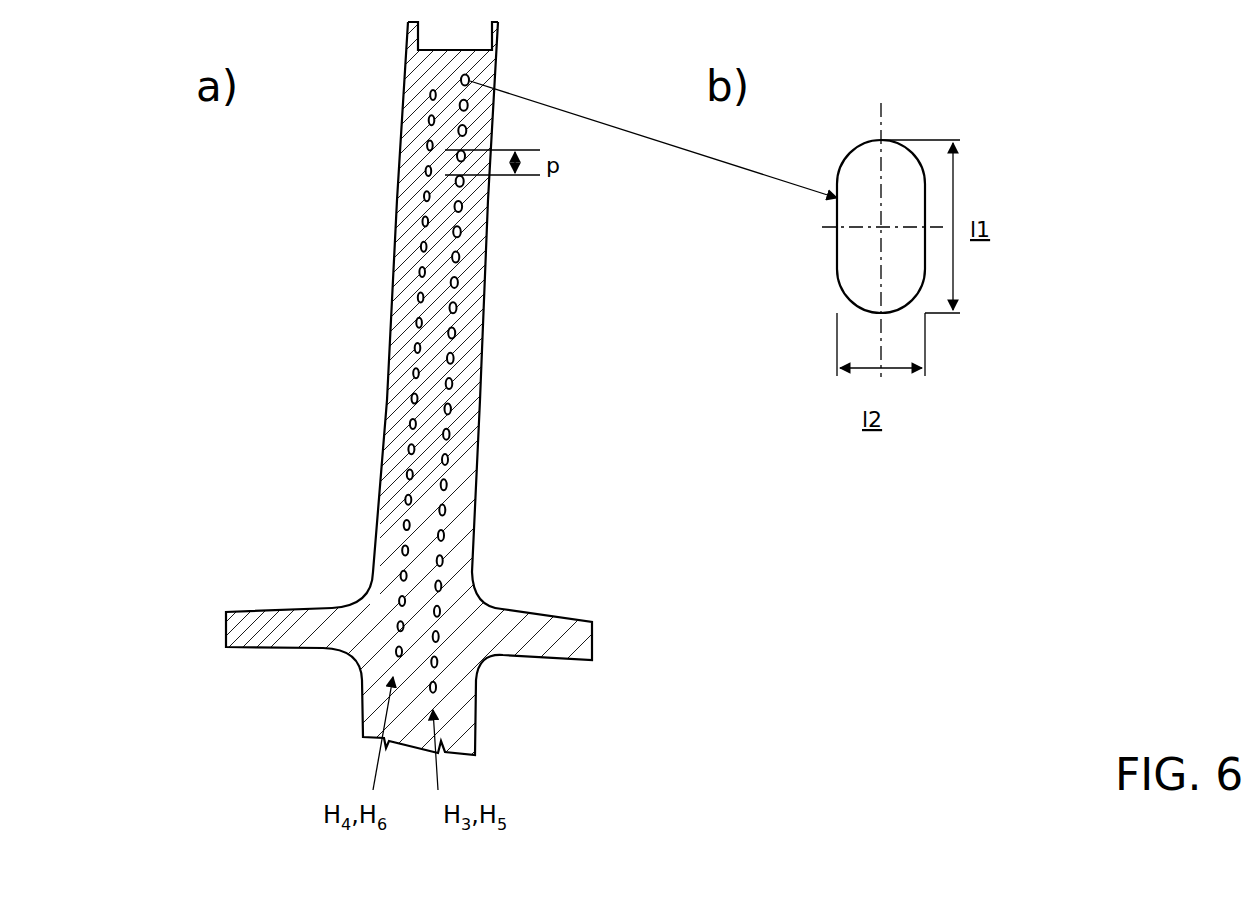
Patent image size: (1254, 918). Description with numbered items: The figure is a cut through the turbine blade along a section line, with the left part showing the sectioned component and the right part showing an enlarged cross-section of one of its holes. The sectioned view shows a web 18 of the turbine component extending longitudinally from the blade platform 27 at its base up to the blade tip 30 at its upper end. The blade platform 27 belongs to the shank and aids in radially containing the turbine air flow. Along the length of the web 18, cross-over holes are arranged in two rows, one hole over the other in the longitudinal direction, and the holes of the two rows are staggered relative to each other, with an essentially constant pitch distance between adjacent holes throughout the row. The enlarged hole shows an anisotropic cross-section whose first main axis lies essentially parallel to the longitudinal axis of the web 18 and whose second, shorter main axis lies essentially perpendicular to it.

The fourth web 18 is at (463, 348).
The blade platform 27 is at (570, 638).
The dove tail or blade tip 30 is at (498, 36).